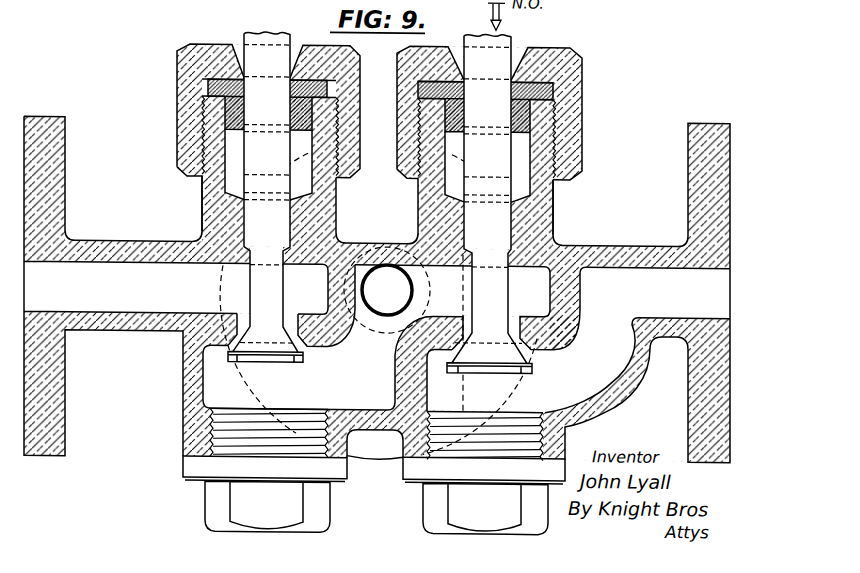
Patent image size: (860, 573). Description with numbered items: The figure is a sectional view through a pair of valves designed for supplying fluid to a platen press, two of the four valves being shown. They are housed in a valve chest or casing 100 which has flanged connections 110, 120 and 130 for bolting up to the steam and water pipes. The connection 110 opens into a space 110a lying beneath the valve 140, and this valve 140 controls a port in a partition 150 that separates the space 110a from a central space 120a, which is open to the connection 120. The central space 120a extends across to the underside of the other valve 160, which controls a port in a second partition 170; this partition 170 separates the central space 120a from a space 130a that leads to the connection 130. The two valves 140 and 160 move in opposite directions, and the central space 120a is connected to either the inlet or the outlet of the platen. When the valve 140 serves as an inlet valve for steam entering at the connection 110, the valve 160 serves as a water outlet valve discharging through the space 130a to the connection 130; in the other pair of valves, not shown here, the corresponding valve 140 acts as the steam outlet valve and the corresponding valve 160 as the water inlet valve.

The valve chest or casing 100 is at (600, 401).
The flanged connection 110 is at (698, 177).
The space beneath the valve 110a is at (532, 364).
The flanged connection 120 is at (387, 266).
The central space 120a is at (333, 362).
The flanged connection 130 is at (60, 182).
The space leading to the connection 130a is at (308, 289).
The valve 140 is at (488, 364).
The partition 150 is at (567, 297).
The valve 160 is at (265, 355).
The partition 170 is at (312, 334).